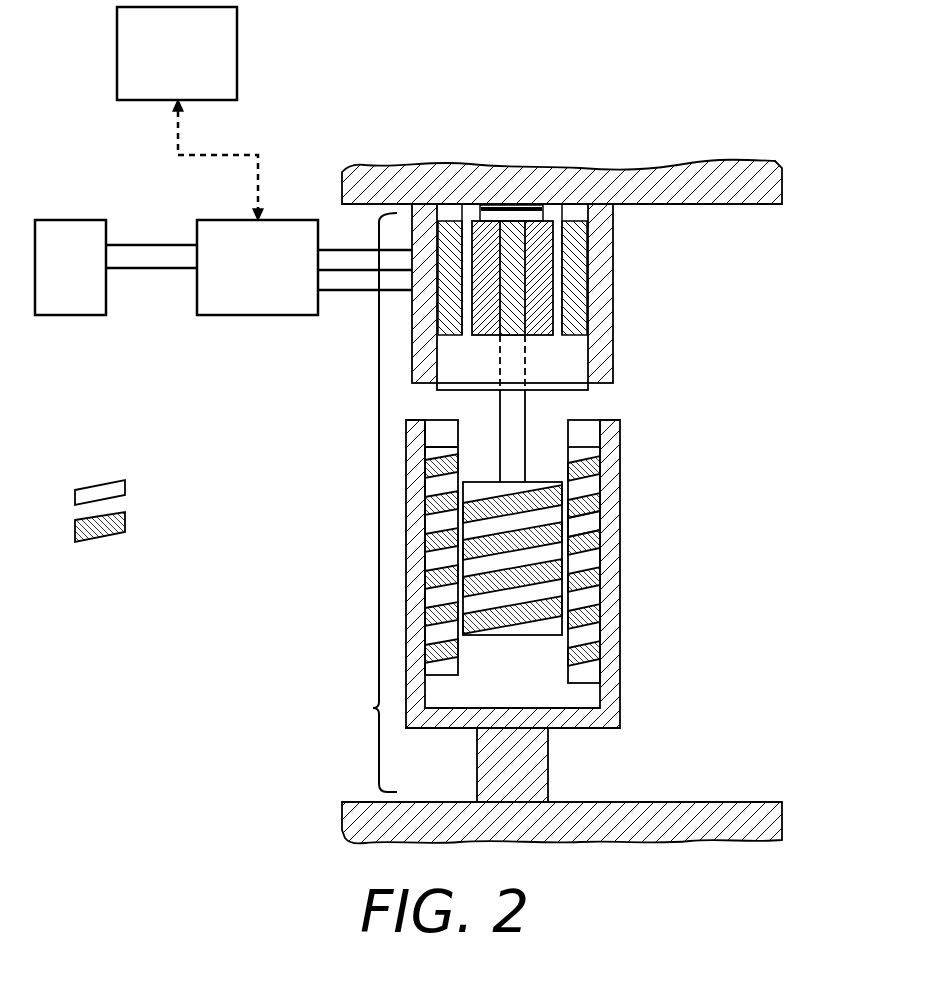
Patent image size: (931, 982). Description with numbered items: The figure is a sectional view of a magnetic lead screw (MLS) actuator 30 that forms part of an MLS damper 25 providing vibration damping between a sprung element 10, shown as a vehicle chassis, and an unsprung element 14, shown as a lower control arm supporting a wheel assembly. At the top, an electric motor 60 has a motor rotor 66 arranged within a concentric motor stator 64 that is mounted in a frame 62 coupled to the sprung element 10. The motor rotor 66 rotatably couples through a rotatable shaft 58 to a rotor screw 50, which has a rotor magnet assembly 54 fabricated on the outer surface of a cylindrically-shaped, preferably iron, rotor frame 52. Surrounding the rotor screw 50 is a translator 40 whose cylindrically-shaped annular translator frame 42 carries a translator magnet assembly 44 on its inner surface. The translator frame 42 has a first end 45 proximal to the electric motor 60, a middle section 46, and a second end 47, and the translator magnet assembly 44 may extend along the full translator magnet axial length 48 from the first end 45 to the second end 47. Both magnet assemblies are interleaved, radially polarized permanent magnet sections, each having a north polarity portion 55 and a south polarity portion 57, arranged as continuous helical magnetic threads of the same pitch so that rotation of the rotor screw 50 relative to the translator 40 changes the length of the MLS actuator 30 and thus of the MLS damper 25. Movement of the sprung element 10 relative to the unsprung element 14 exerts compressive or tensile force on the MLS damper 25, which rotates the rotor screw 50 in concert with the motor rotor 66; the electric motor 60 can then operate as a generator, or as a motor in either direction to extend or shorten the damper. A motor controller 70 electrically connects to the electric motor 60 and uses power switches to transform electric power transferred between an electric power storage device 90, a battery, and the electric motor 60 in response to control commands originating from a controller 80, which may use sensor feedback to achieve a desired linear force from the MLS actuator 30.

The sprung element 10 is at (651, 188).
The unsprung element 14 is at (680, 842).
The MLS damper 25 is at (373, 708).
The MLS actuator 30 is at (427, 582).
The translator 40 is at (588, 436).
The translator frame 42 is at (402, 551).
The translator magnet assembly 44 is at (592, 527).
The first end 45 is at (633, 470).
The middle section 46 is at (633, 567).
The second end 47 is at (633, 668).
The translator magnet axial length 48 is at (278, 422).
The rotor screw 50 is at (538, 592).
The rotor frame 52 is at (528, 630).
The rotor magnet assembly 54 is at (497, 620).
The north polarity portion 55 is at (120, 492).
The south polarity portion 57 is at (337, 560).
The rotatable shaft 58 is at (515, 358).
The electric motor 60 is at (613, 216).
The frame 62 is at (600, 244).
The motor stator 64 is at (578, 280).
The motor rotor 66 is at (560, 312).
The motor controller 70 is at (274, 283).
The controller 80 is at (194, 68).
The electric power storage device 90 is at (87, 283).